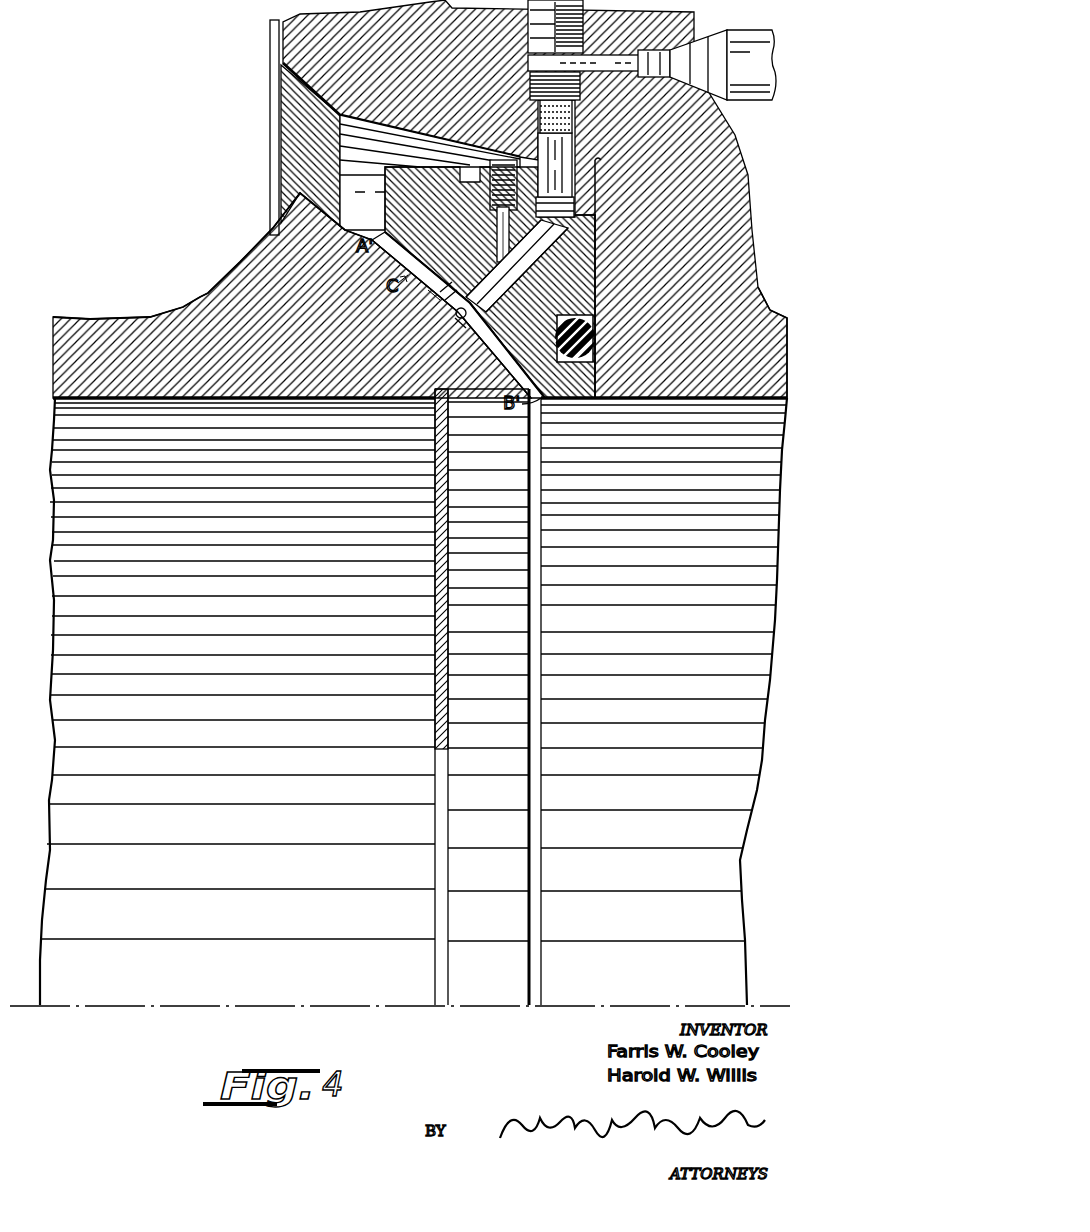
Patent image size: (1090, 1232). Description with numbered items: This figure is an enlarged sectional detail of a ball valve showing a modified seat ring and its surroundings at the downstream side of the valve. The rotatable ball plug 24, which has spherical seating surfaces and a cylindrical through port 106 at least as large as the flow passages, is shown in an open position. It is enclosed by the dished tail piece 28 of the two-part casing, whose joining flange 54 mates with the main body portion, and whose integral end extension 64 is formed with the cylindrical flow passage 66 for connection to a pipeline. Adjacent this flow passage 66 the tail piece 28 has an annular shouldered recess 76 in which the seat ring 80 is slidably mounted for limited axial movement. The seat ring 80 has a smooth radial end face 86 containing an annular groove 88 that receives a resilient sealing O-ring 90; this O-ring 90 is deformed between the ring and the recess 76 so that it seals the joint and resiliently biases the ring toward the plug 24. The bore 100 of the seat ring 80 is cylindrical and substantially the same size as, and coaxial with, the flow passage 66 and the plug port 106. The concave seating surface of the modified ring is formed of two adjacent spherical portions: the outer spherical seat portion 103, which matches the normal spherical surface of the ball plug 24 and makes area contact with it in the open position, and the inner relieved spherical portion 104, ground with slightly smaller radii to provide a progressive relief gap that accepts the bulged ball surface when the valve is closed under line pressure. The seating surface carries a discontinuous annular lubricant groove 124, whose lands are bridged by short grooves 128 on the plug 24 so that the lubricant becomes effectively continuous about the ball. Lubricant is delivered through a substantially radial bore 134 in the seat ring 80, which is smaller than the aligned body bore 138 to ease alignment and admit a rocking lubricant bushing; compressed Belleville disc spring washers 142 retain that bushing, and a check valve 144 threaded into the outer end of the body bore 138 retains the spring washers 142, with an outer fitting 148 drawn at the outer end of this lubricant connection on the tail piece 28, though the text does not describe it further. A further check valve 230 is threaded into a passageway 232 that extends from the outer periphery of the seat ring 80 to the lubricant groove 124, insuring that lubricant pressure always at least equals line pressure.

The ball plug 24 is at (168, 372).
The tail piece 28 is at (730, 160).
The joining flange 54 is at (306, 22).
The end extension 64 is at (772, 326).
The flow passage 66 is at (682, 404).
The annular shouldered recess 76 is at (599, 233).
The seat ring 80 is at (424, 292).
The end face 86 is at (595, 290).
The annular groove 88 is at (580, 318).
The sealing O-ring 90 is at (594, 350).
The bore 100 is at (588, 398).
The spherical seat portion 103 is at (292, 295).
The relieved spherical concave seat portion 104 is at (508, 360).
The through port 106 is at (246, 404).
The lubricant groove 124 is at (434, 307).
The short grooves 128 is at (451, 334).
The radial bore 134 is at (580, 182).
The body bore 138 is at (575, 153).
The Belleville disc spring washers 142 is at (575, 118).
The check valve 144 is at (583, 90).
The fitting 148 is at (745, 42).
The check valve 230 is at (490, 165).
The passageway 232 is at (497, 235).